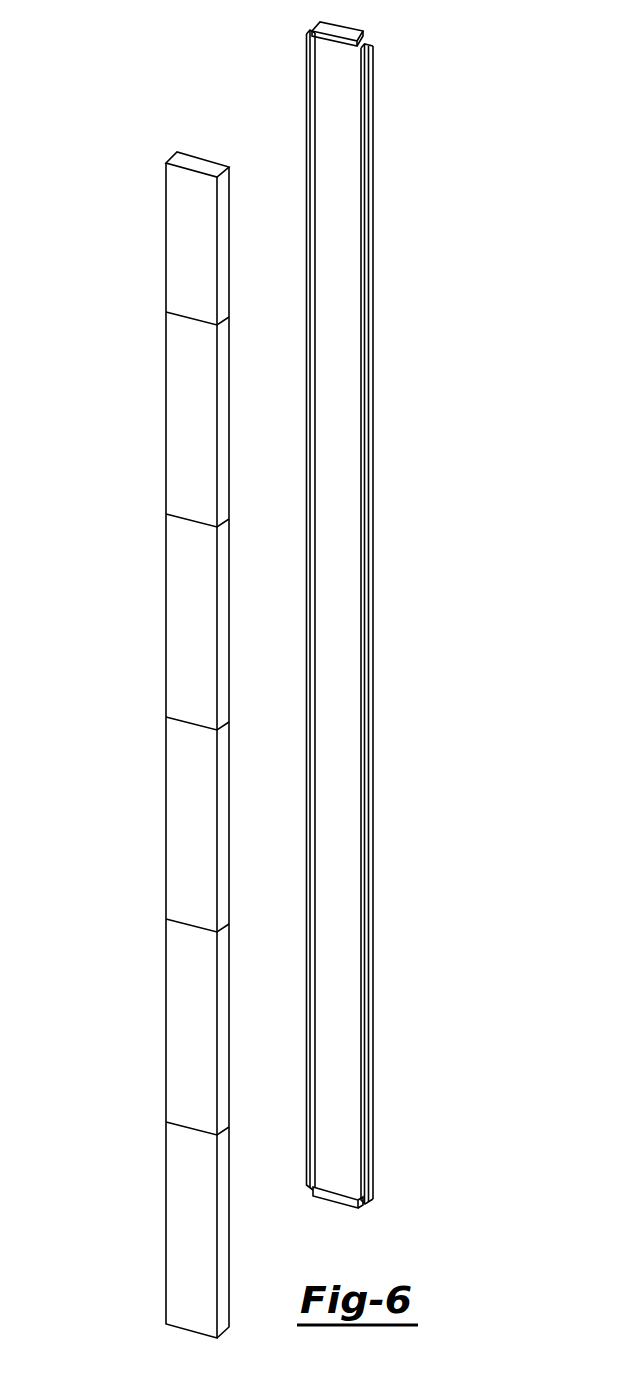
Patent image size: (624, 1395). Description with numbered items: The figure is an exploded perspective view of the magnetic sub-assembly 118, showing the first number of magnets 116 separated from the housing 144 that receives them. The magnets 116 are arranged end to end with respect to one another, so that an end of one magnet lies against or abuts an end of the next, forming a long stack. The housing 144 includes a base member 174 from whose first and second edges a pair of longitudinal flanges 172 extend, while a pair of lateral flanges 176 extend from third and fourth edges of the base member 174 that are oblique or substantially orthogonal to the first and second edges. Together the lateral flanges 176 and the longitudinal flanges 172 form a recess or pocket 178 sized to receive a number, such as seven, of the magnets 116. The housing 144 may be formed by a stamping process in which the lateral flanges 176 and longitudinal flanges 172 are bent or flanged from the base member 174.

The first number of magnets 116 is at (112, 312).
The magnetic sub-assembly 118 is at (359, 608).
The housing 144 is at (388, 152).
The longitudinal flanges 172 is at (350, 617).
The base member 174 is at (343, 217).
The lateral flanges 176 is at (350, 33).
The recess or pocket 178 is at (344, 1030).